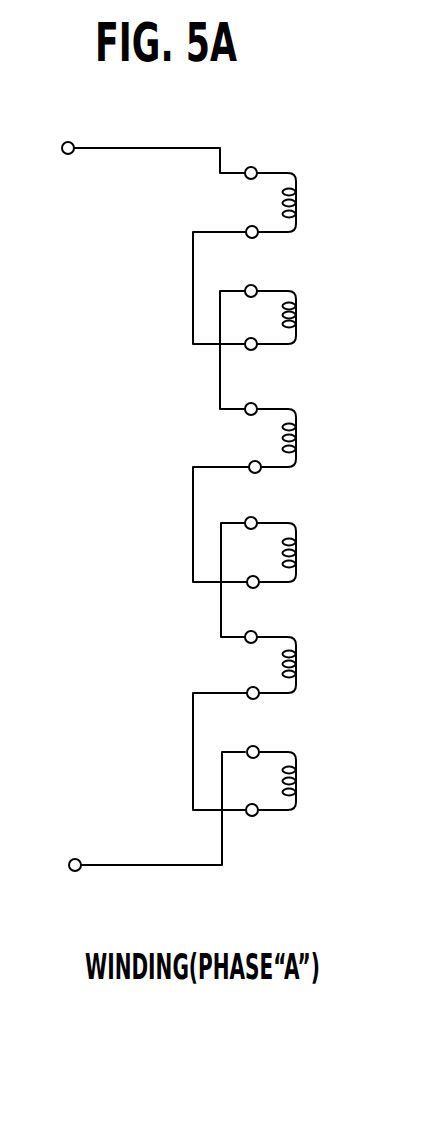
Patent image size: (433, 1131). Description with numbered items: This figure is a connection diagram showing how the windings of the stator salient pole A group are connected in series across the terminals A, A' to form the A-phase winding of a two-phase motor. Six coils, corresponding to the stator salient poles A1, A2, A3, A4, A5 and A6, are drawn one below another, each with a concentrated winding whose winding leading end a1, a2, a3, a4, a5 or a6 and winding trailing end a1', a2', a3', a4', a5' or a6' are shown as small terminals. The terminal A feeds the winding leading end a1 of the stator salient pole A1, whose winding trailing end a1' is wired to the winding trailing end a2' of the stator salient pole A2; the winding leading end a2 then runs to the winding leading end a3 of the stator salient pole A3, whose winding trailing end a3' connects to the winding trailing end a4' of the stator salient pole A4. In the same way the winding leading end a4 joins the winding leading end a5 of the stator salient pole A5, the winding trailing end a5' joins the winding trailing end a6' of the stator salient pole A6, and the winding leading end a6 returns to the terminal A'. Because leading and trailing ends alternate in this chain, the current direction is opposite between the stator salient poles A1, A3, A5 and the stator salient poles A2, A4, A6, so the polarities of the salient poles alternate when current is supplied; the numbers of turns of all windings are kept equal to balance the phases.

The terminal A is at (140, 153).
The terminal A' is at (134, 821).
The winding leading end a1 is at (251, 162).
The winding trailing end a1' is at (228, 273).
The stator salient pole A1 is at (301, 202).
The winding leading end a2 is at (241, 336).
The winding trailing end a2' is at (251, 332).
The stator salient pole A2 is at (300, 317).
The winding leading end a3 is at (251, 398).
The winding trailing end a3' is at (231, 507).
The stator salient pole A3 is at (301, 438).
The winding leading end a4 is at (243, 566).
The winding trailing end a4' is at (255, 568).
The stator salient pole A4 is at (300, 552).
The winding leading end a5 is at (252, 625).
The winding trailing end a5' is at (231, 735).
The stator salient pole A5 is at (300, 665).
The winding leading end a6 is at (253, 740).
The winding trailing end a6' is at (253, 795).
The stator salient pole A6 is at (300, 781).